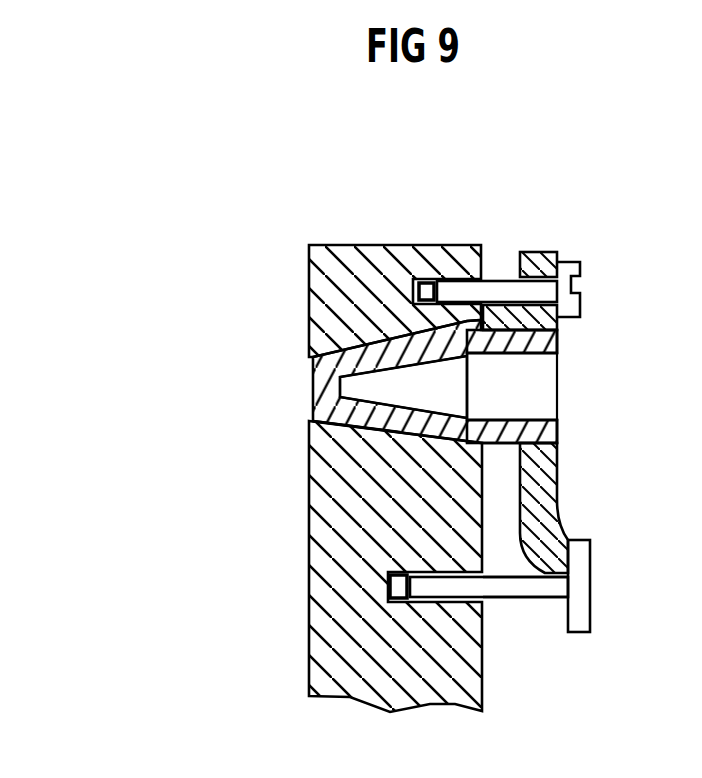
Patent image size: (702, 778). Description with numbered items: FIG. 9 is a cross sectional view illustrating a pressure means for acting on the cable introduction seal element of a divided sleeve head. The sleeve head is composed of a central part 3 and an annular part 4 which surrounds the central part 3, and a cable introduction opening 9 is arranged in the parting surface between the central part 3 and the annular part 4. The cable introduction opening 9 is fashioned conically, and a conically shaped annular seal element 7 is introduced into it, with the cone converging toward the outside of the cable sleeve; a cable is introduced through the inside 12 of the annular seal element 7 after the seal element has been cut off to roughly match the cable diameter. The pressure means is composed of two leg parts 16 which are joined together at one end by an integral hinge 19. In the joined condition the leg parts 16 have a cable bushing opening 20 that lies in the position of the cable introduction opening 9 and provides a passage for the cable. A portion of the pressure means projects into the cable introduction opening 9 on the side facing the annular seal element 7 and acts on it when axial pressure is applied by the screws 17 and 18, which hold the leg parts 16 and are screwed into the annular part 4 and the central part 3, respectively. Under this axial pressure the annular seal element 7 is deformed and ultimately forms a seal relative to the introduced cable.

The central part 3 is at (322, 567).
The annular part 4 is at (373, 268).
The annular seal element 7 is at (318, 374).
The cable introduction opening 9 is at (318, 443).
The inside of annular seal element 12 is at (332, 388).
The leg parts 16 is at (565, 335).
The screw 17 is at (573, 272).
The screw 18 is at (580, 585).
The integral hinge 19 is at (537, 578).
The cable bushing opening 20 is at (565, 405).